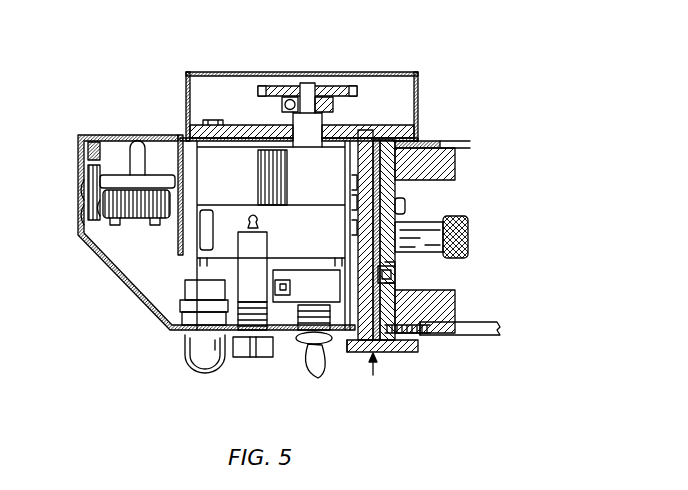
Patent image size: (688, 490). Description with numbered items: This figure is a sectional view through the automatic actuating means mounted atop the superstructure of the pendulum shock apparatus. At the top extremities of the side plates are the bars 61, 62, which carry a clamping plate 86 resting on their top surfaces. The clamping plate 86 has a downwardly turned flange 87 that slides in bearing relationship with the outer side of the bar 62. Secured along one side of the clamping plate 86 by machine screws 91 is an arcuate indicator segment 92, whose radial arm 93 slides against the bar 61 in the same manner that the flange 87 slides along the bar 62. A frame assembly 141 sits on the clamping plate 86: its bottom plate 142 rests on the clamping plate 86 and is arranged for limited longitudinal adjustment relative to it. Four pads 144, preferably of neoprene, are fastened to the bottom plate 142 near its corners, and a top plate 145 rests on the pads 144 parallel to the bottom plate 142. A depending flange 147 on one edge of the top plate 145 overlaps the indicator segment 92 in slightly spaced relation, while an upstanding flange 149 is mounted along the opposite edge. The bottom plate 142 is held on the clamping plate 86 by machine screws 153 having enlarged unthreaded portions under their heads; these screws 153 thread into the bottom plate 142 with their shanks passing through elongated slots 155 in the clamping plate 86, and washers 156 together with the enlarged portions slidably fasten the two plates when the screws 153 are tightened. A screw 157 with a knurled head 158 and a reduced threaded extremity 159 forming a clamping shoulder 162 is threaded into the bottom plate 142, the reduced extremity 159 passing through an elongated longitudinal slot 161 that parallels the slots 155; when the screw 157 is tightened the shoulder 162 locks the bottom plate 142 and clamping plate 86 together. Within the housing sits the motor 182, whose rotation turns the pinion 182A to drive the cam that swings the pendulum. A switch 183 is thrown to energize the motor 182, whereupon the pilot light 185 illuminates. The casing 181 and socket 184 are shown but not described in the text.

The upstanding flange 149 is at (240, 128).
The pinion 182A is at (282, 90).
The motor 182 is at (310, 135).
The top plate 145 is at (377, 157).
The bottom plate 142 is at (378, 147).
The clamping plate 86 is at (427, 142).
The downwardly turned flange 87 is at (440, 142).
The bar 62 is at (457, 165).
The machine screws 153 is at (400, 203).
The screw 157 is at (423, 222).
The knurled head 158 is at (468, 238).
The elongated slots 155 is at (393, 283).
The washers 156 is at (398, 272).
The bar 61 is at (460, 308).
The arcuate indicator segment 92 is at (430, 336).
The radial arm 93 is at (425, 338).
The machine screws 91 is at (420, 342).
The pads 144 is at (378, 345).
The frame assembly 141 is at (381, 376).
The depending flange 147 is at (352, 350).
The clamping shoulder 162 is at (360, 183).
The elongated longitudinal slot 161 is at (365, 202).
The reduced threaded extremity 159 is at (370, 227).
The casing 181 is at (140, 300).
The pilot light 185 is at (197, 357).
The socket 184 is at (260, 357).
The switch 183 is at (320, 363).